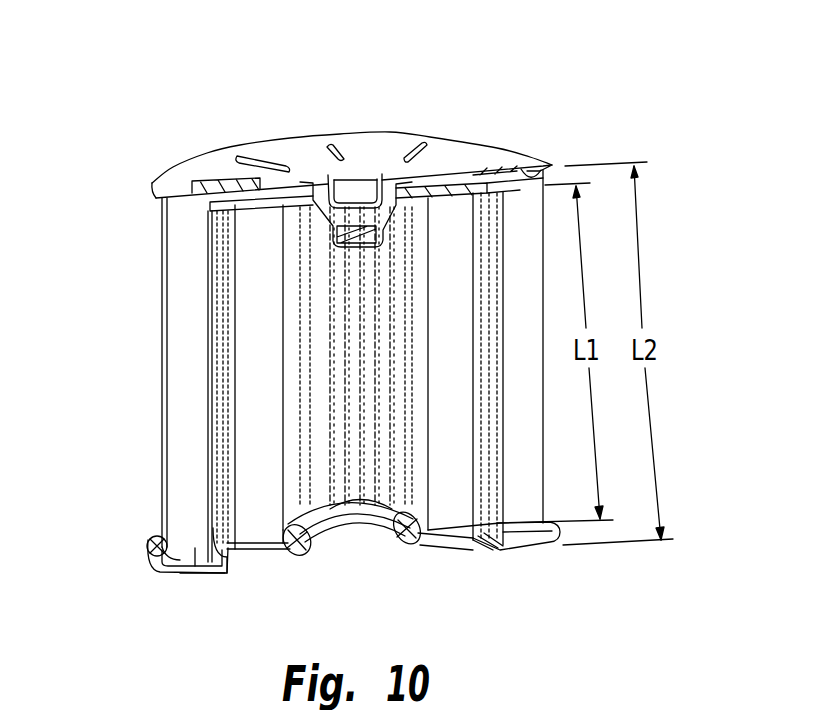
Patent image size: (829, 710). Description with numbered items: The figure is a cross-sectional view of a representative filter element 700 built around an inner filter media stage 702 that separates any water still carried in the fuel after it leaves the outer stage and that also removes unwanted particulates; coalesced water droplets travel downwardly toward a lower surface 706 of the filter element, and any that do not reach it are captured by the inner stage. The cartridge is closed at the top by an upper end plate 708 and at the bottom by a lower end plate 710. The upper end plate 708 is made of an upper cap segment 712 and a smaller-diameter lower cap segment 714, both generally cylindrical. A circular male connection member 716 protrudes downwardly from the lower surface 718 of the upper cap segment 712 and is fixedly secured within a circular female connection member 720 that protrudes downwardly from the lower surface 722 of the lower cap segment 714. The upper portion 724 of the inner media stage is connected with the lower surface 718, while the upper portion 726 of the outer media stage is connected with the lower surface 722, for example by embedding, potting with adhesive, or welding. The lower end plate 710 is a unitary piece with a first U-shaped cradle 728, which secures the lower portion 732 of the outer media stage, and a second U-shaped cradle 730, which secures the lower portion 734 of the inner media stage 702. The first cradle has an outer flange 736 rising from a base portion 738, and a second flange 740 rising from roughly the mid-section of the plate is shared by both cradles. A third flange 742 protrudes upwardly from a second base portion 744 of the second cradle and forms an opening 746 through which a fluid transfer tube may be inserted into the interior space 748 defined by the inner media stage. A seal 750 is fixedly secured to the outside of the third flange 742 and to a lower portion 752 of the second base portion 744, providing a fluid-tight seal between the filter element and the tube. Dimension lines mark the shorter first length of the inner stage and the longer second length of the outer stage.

The filter element 700 is at (514, 54).
The inner filter media stage 702 is at (253, 316).
The lower surface 706 is at (484, 515).
The upper end plate 708 is at (236, 153).
The lower end plate 710 is at (180, 582).
The upper cap segment 712 is at (275, 158).
The lower cap segment 714 is at (445, 180).
The male connection member 716 is at (380, 178).
The lower surface 718 is at (533, 160).
The female connection member 720 is at (397, 177).
The lower surface 722 is at (436, 198).
The upper portion 724 is at (250, 220).
The upper portion 726 is at (180, 207).
The first U-shaped cradle 728 is at (149, 540).
The second U-shaped cradle 730 is at (232, 547).
The lower portion 732 is at (197, 552).
The lower portion 734 is at (276, 550).
The outer flange 736 is at (150, 564).
The base portion 738 is at (167, 533).
The second flange 740 is at (224, 550).
The third flange 742 is at (312, 553).
The second base portion 744 is at (267, 543).
The opening 746 is at (333, 507).
The interior space 748 is at (357, 405).
The seal 750 is at (356, 522).
The lower portion 752 is at (418, 547).